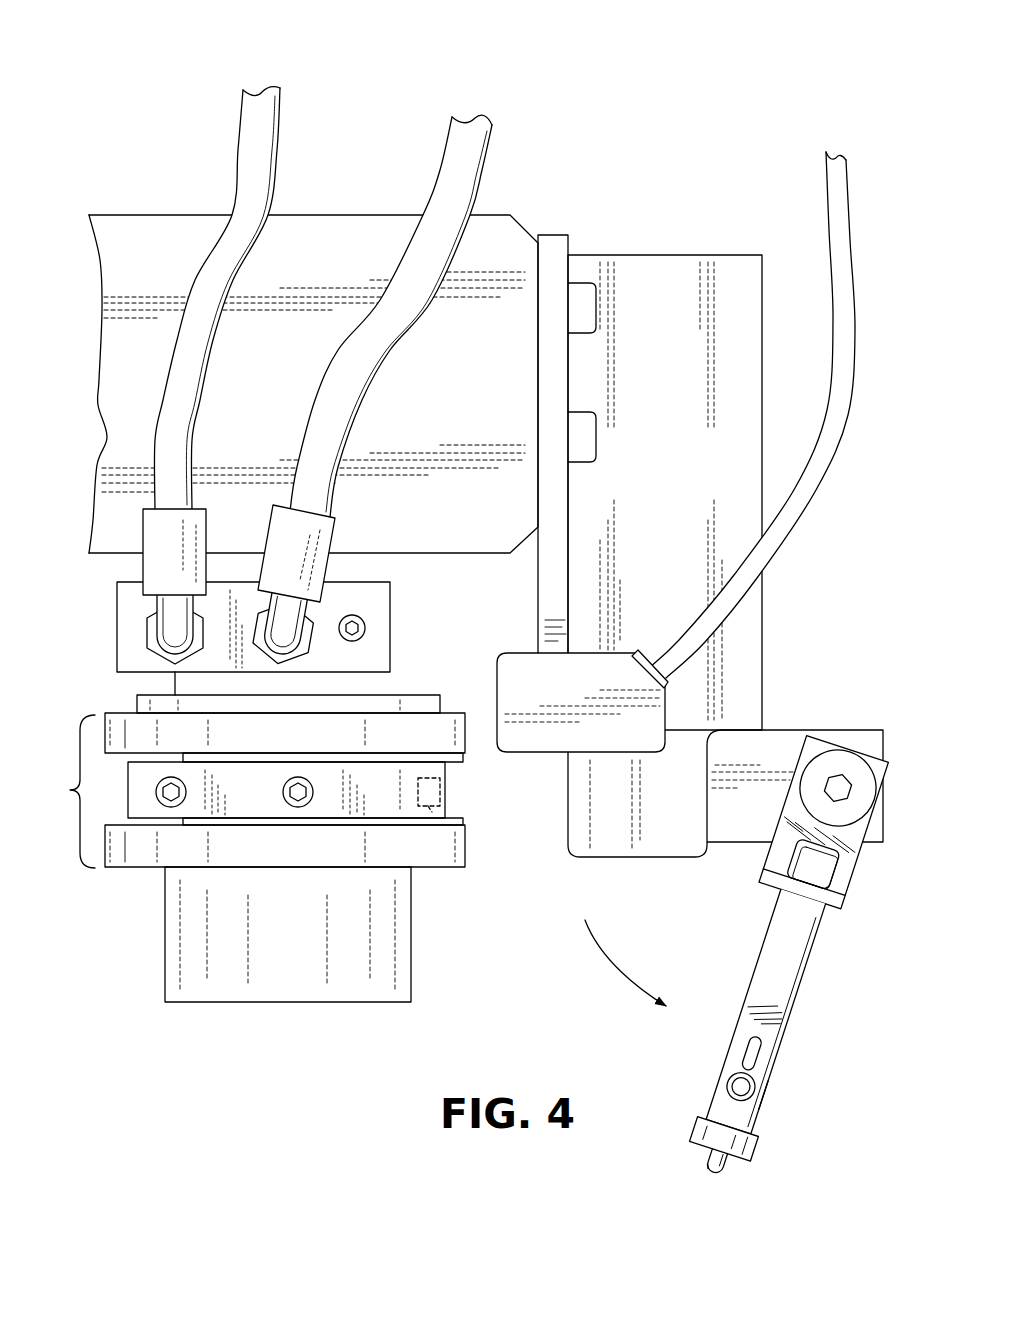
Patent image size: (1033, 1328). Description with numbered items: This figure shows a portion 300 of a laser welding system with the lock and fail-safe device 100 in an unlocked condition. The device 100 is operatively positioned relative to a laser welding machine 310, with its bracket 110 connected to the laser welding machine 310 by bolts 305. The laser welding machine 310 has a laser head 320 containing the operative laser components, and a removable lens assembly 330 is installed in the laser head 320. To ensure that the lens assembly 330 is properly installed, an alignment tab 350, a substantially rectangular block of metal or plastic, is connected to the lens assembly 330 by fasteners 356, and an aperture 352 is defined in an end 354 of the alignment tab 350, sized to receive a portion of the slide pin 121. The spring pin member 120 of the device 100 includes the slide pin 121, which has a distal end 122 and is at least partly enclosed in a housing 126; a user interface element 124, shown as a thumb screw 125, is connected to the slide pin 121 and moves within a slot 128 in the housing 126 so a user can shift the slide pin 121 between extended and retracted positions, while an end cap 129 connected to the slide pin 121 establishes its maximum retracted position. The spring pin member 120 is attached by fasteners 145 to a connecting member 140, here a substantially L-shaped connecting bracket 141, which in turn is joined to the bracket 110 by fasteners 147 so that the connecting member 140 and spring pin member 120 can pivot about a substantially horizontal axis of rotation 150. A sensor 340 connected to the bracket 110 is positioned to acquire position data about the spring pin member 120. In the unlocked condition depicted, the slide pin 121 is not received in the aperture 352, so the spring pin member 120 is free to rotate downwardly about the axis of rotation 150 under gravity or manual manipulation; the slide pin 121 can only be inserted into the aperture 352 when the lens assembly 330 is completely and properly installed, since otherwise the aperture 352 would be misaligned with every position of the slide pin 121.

The portion of a system 300 is at (599, 34).
The laser welding machine 310 is at (78, 262).
The laser head 320 is at (82, 636).
The lens assembly 330 is at (279, 837).
The alignment tab 350 is at (142, 808).
The fasteners 356 is at (166, 806).
The end of the alignment tab 354 is at (442, 806).
The aperture 352 is at (432, 812).
The lock and fail-safe device 100 is at (725, 666).
The bracket 110 is at (690, 262).
The bolts 305 is at (598, 440).
The sensor 340 is at (672, 698).
The connecting member 140 is at (856, 822).
The connecting bracket 141 is at (856, 833).
The fasteners 145 is at (852, 882).
The fasteners 147 is at (878, 770).
The axis of rotation 150 is at (838, 788).
The spring pin member 120 is at (746, 1066).
The slide pin 121 is at (728, 1172).
The distal end 122 is at (713, 1181).
The user interface element 124 is at (762, 1103).
The thumb screw 125 is at (757, 1086).
The housing 126 is at (782, 1015).
The slot 128 is at (760, 1046).
The end cap 129 is at (755, 1150).